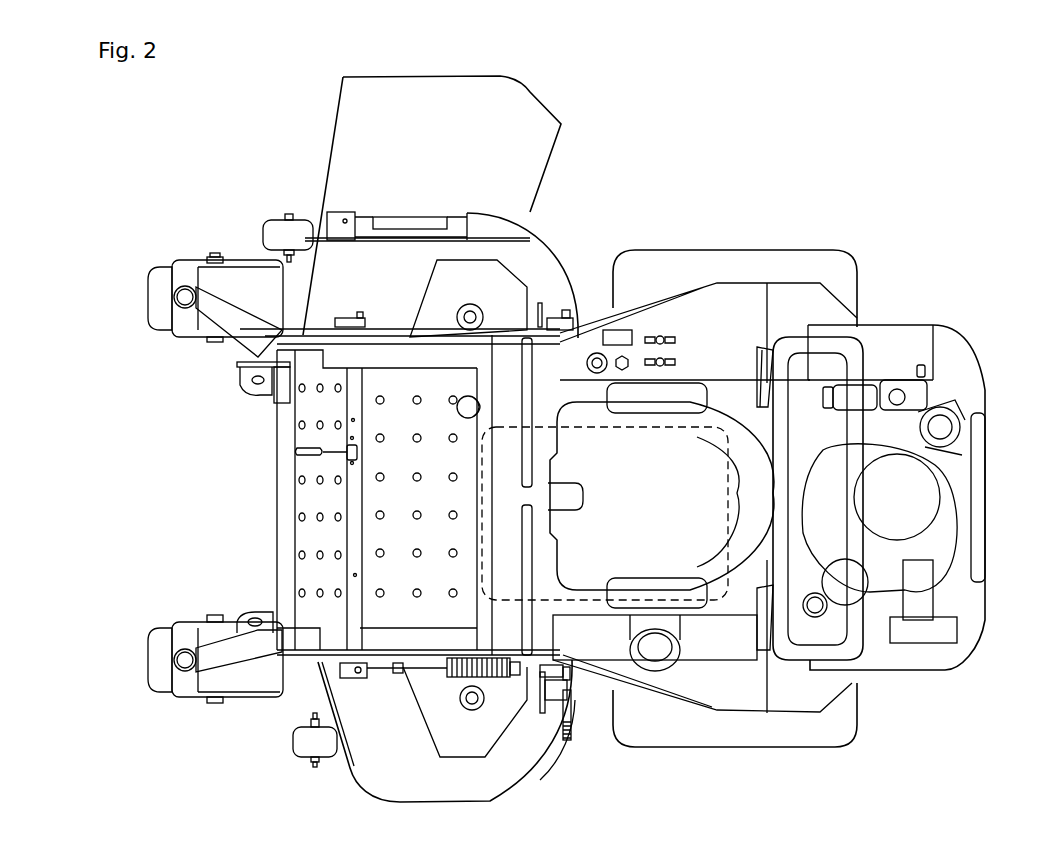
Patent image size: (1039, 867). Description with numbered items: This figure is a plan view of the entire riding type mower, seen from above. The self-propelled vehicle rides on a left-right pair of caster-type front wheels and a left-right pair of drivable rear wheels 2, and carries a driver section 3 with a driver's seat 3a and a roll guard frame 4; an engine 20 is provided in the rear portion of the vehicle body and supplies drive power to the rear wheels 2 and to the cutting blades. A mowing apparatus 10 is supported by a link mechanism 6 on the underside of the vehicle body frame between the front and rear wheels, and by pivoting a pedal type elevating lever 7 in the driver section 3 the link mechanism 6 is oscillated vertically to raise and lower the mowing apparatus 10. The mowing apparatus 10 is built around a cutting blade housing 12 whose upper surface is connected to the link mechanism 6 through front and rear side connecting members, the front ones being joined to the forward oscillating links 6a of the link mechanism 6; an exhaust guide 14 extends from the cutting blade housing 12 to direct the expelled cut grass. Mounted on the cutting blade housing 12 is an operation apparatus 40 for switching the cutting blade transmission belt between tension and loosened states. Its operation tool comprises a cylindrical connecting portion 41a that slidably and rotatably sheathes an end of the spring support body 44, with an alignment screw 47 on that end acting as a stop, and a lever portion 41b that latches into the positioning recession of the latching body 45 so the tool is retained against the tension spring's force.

The rear wheels 2 is at (790, 257).
The driver section 3 is at (673, 272).
The driver's seat 3a is at (668, 437).
The roll guard frame 4 is at (857, 360).
The link mechanism 6 is at (318, 322).
The forward oscillating links 6a is at (347, 333).
The pedal type elevating lever 7 is at (270, 398).
The mowing apparatus 10 is at (556, 238).
The cutting blade housing 12 is at (373, 770).
The exhaust guide 14 is at (345, 142).
The engine 20 is at (950, 535).
The operation apparatus 40 is at (580, 728).
The connecting portion 41a is at (577, 693).
The lever portion 41b is at (548, 710).
The spring support body 44 is at (562, 733).
The latching body 45 is at (537, 688).
The alignment screw 47 is at (567, 720).